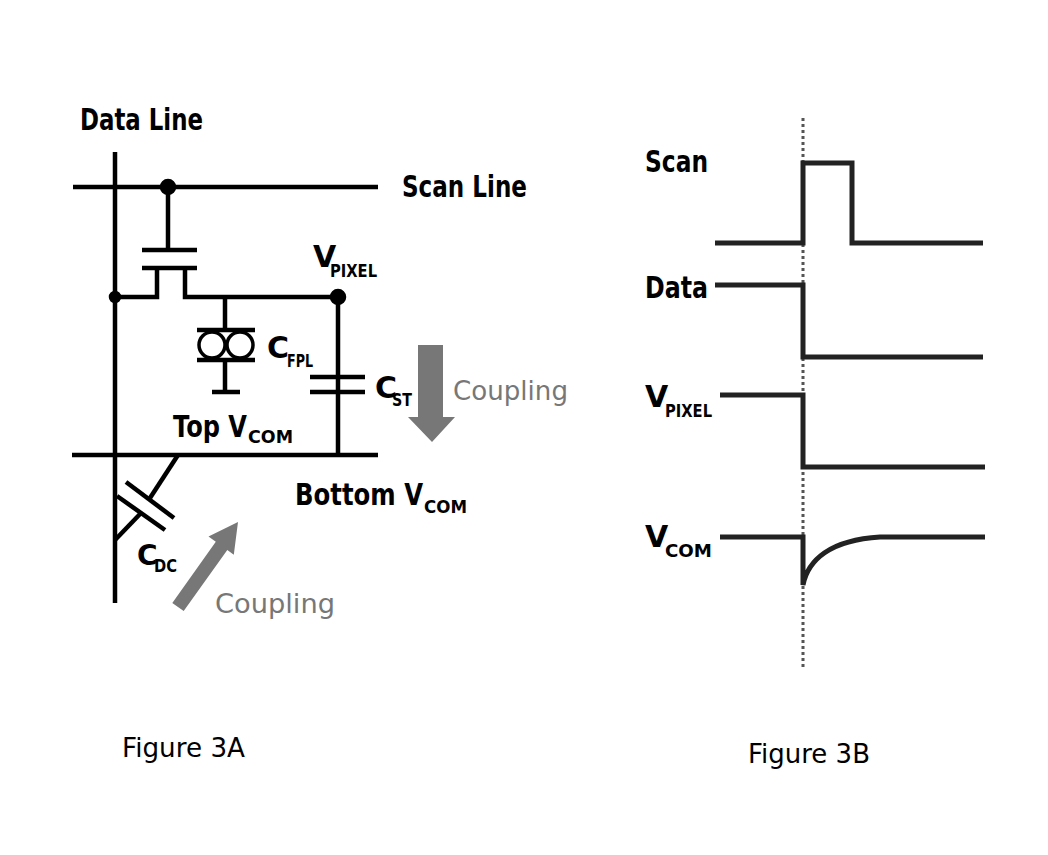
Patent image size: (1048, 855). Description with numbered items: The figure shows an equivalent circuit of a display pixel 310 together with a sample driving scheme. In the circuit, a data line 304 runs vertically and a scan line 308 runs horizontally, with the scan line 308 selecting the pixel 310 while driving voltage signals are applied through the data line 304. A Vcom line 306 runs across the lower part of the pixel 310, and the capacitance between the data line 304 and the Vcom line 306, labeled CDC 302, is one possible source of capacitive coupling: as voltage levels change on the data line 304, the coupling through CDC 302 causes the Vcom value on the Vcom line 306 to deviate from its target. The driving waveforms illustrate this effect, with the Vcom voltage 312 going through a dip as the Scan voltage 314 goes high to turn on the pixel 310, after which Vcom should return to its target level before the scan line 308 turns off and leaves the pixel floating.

In FIG. 3A, the pixel 310 is at (230, 70).
In FIG. 3A, the scan line 308 is at (318, 183).
In FIG. 3A, the Vcom line 306 is at (380, 455).
In FIG. 3A, the data line 304 is at (118, 603).
In FIG. 3A, the CDC 302 is at (158, 502).
In FIG. 3B, the Scan voltage 314 is at (857, 177).
In FIG. 3B, the Vcom voltage 312 is at (848, 572).